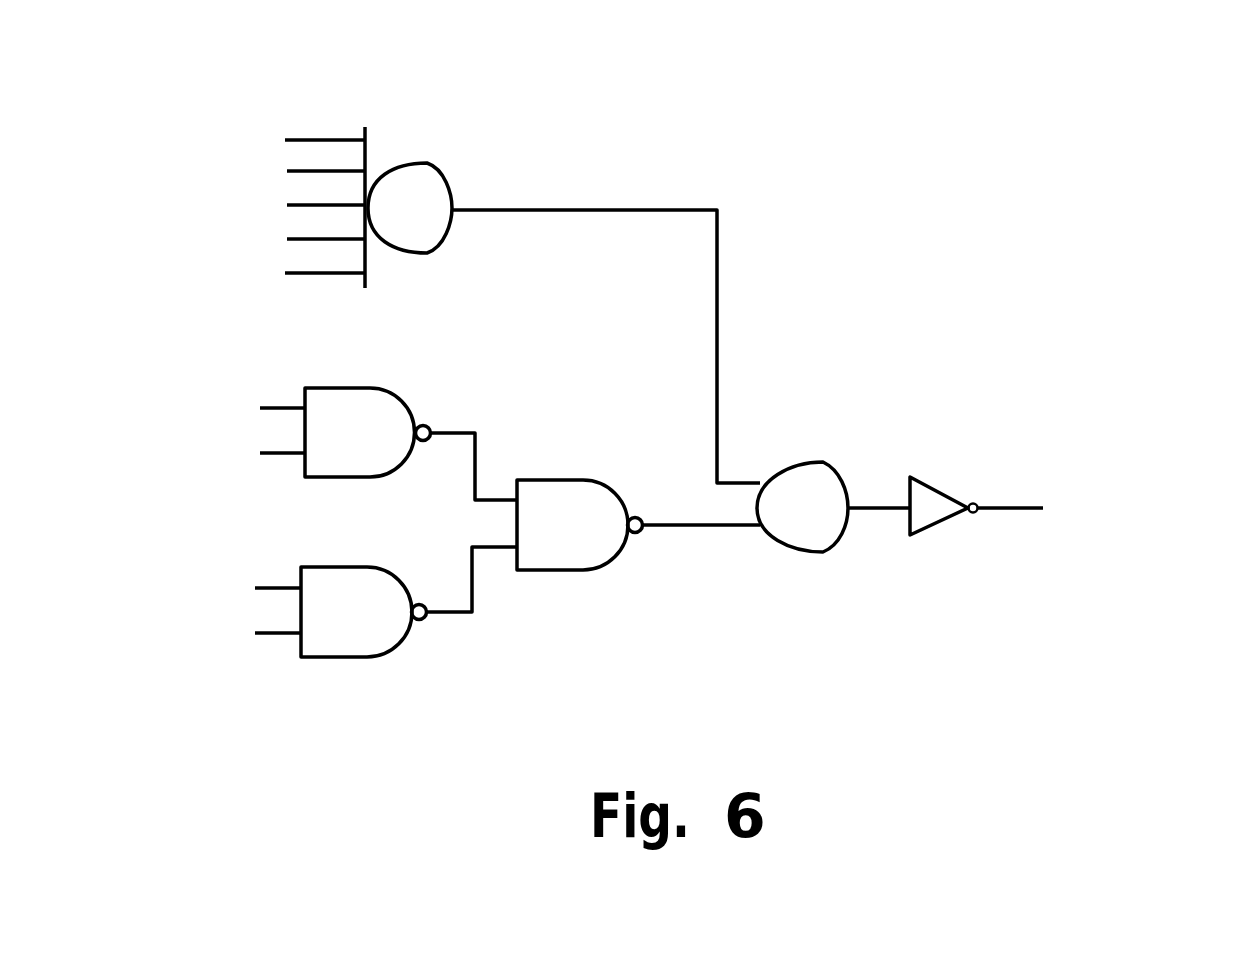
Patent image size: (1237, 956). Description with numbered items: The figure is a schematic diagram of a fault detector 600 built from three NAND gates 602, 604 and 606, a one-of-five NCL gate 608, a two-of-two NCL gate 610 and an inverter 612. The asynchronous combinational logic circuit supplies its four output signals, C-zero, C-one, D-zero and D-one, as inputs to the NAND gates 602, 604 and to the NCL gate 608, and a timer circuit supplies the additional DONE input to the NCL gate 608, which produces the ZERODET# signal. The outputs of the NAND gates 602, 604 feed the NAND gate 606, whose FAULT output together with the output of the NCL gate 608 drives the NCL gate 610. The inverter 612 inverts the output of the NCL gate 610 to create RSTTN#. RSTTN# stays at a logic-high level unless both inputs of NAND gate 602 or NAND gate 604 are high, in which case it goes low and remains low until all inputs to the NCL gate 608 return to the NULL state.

The fault detector 600 is at (1012, 140).
The NAND gate 602 is at (352, 388).
The NAND gate 604 is at (350, 567).
The NAND gate 606 is at (565, 480).
The 1-of-5 NCL gate 608 is at (418, 162).
The 2-of-2 NCL gate 610 is at (802, 462).
The inverter 612 is at (940, 488).